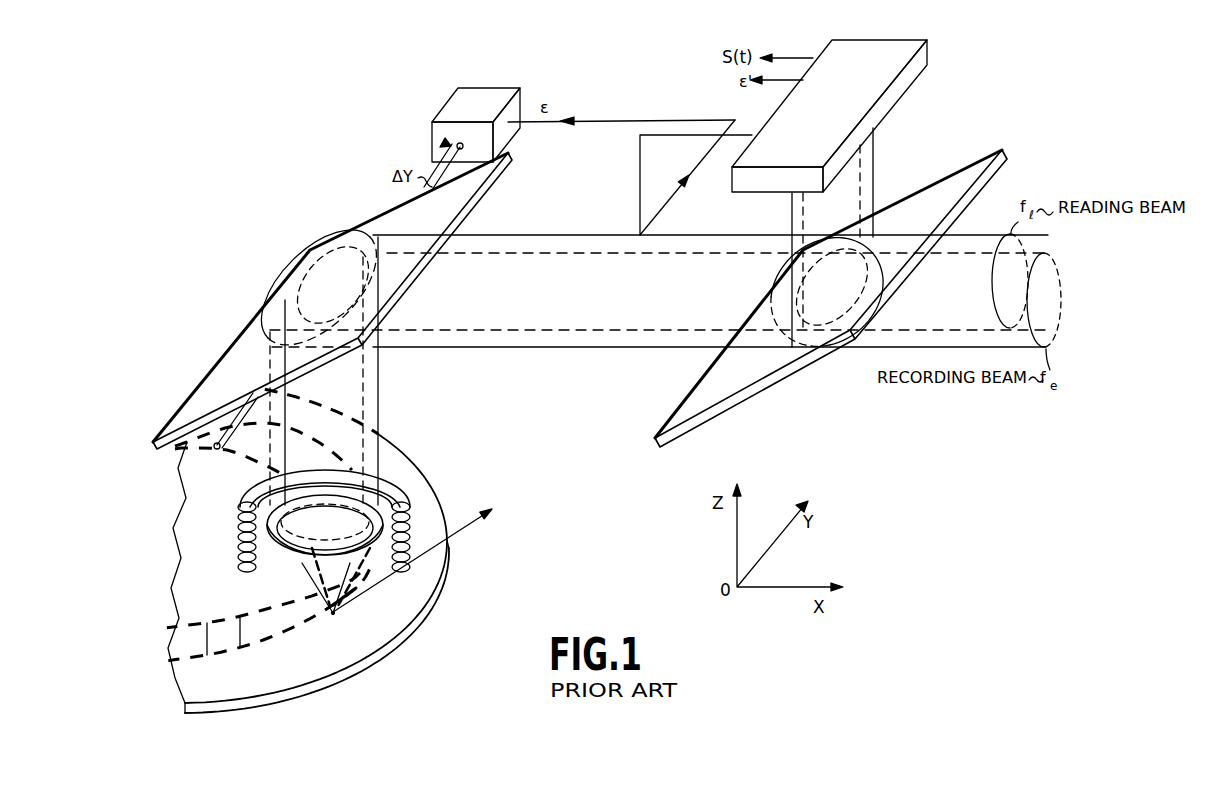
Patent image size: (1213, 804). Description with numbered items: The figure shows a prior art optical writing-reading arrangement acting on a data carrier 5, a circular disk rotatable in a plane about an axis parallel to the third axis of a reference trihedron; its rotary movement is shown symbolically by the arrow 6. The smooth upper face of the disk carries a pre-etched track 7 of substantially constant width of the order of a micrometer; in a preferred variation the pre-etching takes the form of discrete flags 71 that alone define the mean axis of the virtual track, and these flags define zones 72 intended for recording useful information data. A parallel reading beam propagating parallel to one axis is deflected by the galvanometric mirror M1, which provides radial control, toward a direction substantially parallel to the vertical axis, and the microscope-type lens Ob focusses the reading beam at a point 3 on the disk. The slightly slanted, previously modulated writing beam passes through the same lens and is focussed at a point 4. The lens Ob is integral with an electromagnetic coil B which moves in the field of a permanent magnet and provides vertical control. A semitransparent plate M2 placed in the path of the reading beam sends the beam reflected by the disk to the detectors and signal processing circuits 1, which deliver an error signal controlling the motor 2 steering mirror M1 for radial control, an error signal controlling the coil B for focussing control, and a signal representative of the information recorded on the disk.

The detectors and signal processing circuits 1 is at (912, 77).
The motor 2 is at (447, 102).
The point 3 is at (322, 618).
The point 4 is at (340, 614).
The data carrier 5 is at (428, 596).
The arrow 6 is at (466, 532).
The pre-etched track 7 is at (305, 702).
The flags 71 is at (204, 661).
The zones 72 is at (310, 628).
The electromagnetic coil B is at (392, 490).
The lens Ob is at (402, 518).
The galvanometric mirror M1 is at (270, 302).
The semitransparent plate M2 is at (971, 174).